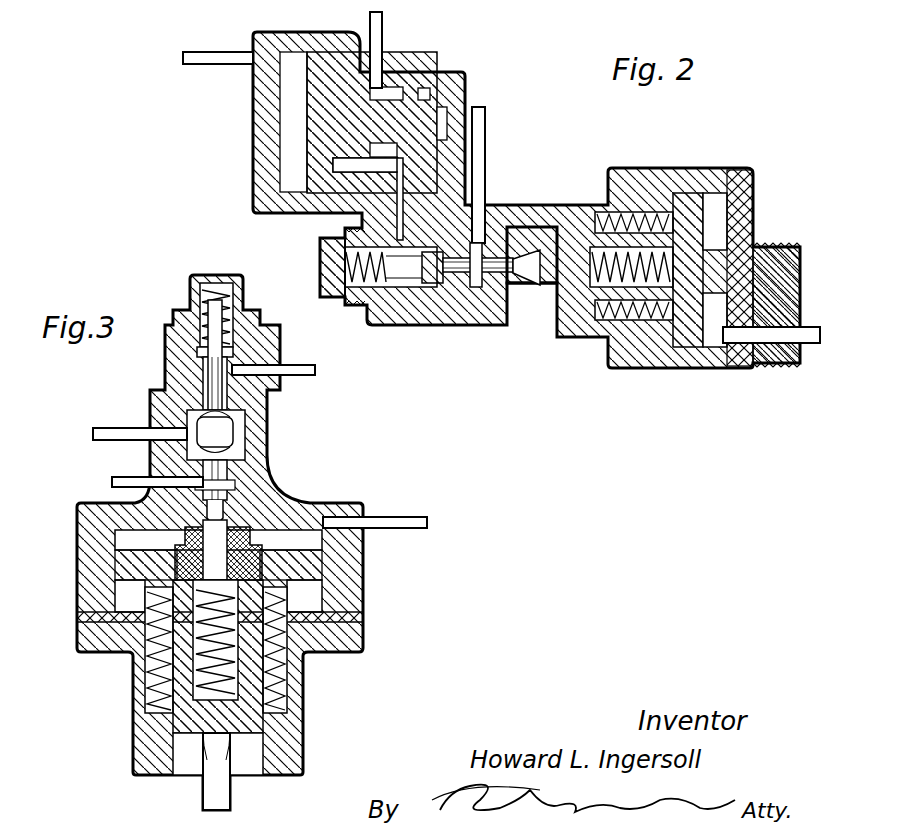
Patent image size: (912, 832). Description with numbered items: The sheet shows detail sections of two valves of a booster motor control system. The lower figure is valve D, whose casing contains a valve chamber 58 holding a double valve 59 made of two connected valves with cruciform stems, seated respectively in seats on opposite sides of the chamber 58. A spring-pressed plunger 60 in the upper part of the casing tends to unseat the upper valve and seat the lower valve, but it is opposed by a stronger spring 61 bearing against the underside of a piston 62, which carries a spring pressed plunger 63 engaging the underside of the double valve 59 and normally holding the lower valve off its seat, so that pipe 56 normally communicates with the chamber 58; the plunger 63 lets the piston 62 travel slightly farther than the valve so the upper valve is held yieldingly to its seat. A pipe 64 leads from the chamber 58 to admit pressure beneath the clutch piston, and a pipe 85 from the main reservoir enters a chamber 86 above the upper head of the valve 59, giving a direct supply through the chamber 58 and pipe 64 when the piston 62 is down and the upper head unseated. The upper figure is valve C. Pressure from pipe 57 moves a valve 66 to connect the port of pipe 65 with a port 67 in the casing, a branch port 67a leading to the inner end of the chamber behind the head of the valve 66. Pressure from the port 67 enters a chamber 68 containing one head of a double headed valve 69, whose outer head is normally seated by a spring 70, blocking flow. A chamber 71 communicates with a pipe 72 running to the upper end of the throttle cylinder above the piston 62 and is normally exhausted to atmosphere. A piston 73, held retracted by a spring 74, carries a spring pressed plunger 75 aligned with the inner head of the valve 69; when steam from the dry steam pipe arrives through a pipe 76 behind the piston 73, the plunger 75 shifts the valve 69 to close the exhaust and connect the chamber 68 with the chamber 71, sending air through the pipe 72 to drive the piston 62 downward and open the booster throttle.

In FIG. 3, the pipe branch 56 is at (113, 480).
In FIG. 2, the pipe branch 57 is at (200, 62).
In FIG. 3, the valve chamber 58 is at (243, 448).
In FIG. 3, the double valve 59 is at (224, 430).
In FIG. 3, the spring-pressed plunger 60 is at (203, 300).
In FIG. 3, the spring 61 is at (273, 645).
In FIG. 3, the piston 62 is at (298, 602).
In FIG. 3, the spring pressed plunger 63 is at (213, 555).
In FIG. 3, the pipe 64 is at (108, 430).
In FIG. 2, the pipe 65 is at (383, 38).
In FIG. 2, the valve 66 is at (318, 113).
In FIG. 2, the port 67 is at (402, 202).
In FIG. 2, the branch port 67a is at (357, 170).
In FIG. 2, the chamber 68 is at (416, 286).
In FIG. 2, the double headed valve 69 is at (462, 272).
In FIG. 2, the spring 70 is at (348, 305).
In FIG. 2, the chamber 71 is at (478, 287).
In FIG. 2, the pipe 72 is at (487, 118).
In FIG. 3, the pipe 72 is at (402, 520).
In FIG. 2, the piston 73 is at (680, 333).
In FIG. 2, the spring 74 is at (615, 313).
In FIG. 2, the spring pressed plunger 75 is at (547, 283).
In FIG. 2, the pipe 76 is at (812, 345).
In FIG. 3, the pipe 85 is at (312, 375).
In FIG. 3, the chamber 86 is at (205, 366).